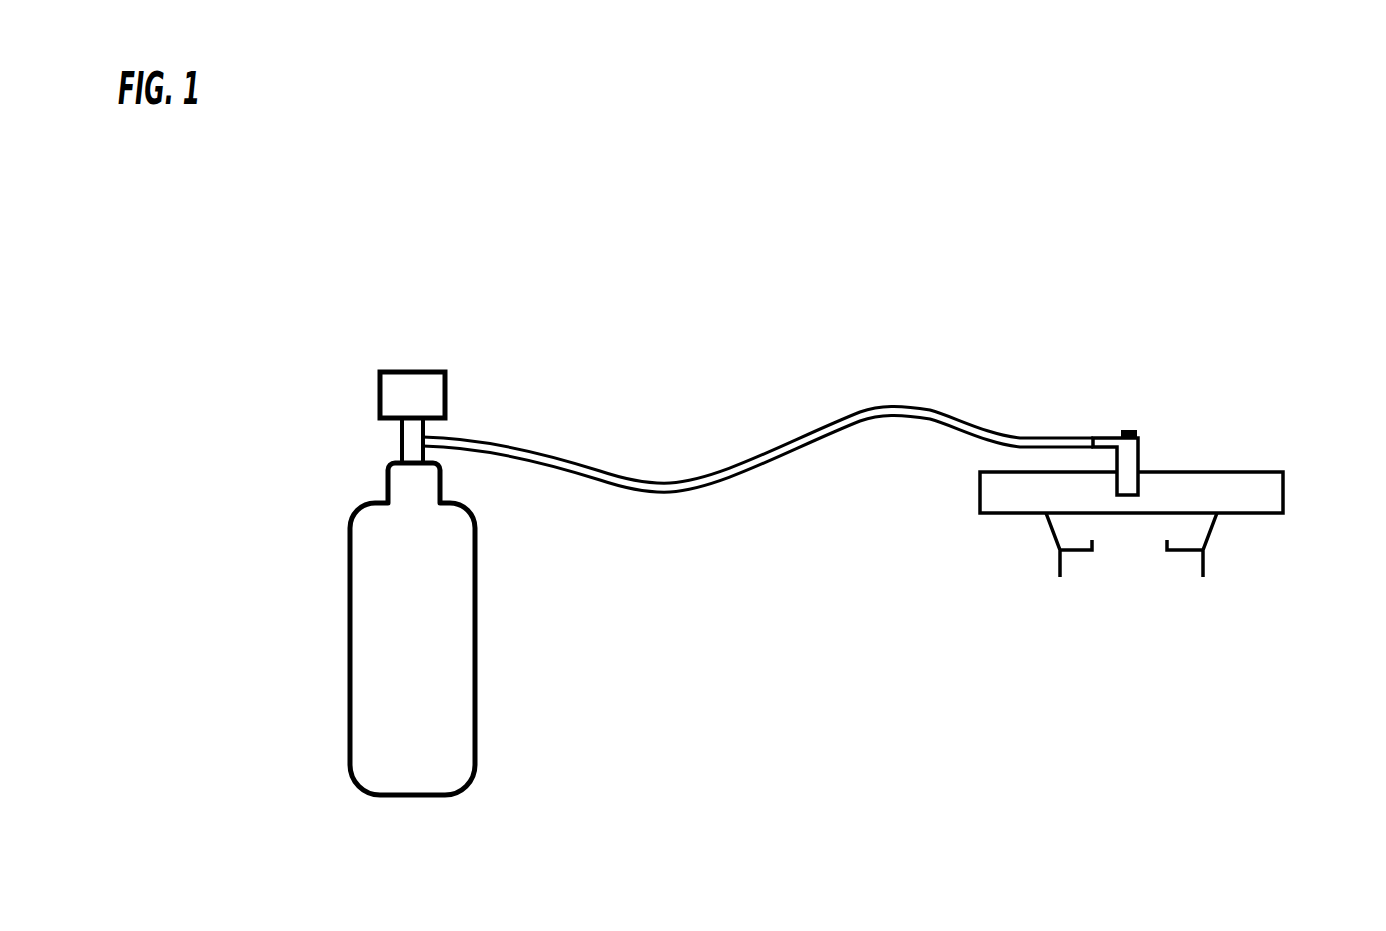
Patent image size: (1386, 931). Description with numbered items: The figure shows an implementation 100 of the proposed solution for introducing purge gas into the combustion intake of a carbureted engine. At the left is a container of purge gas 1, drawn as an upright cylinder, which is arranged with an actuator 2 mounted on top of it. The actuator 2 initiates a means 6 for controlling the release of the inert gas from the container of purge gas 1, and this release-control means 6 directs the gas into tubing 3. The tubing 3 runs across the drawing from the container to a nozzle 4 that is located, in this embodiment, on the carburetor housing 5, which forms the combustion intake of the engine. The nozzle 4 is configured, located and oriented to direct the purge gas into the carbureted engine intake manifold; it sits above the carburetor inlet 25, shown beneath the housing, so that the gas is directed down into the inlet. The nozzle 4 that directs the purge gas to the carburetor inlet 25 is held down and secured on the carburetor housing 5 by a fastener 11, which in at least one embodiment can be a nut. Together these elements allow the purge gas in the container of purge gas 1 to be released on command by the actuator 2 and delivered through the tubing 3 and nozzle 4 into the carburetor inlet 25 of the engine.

The implementation 100 is at (852, 545).
The container of purge gas 1 is at (350, 612).
The actuator 2 is at (381, 372).
The means for controlling the release of the inert gas 6 is at (402, 441).
The tubing 3 is at (567, 465).
The nozzle 4 is at (1142, 436).
The fastener 11 is at (1128, 431).
The carburetor housing 5 is at (1283, 472).
The carburetor inlet 25 is at (1124, 540).